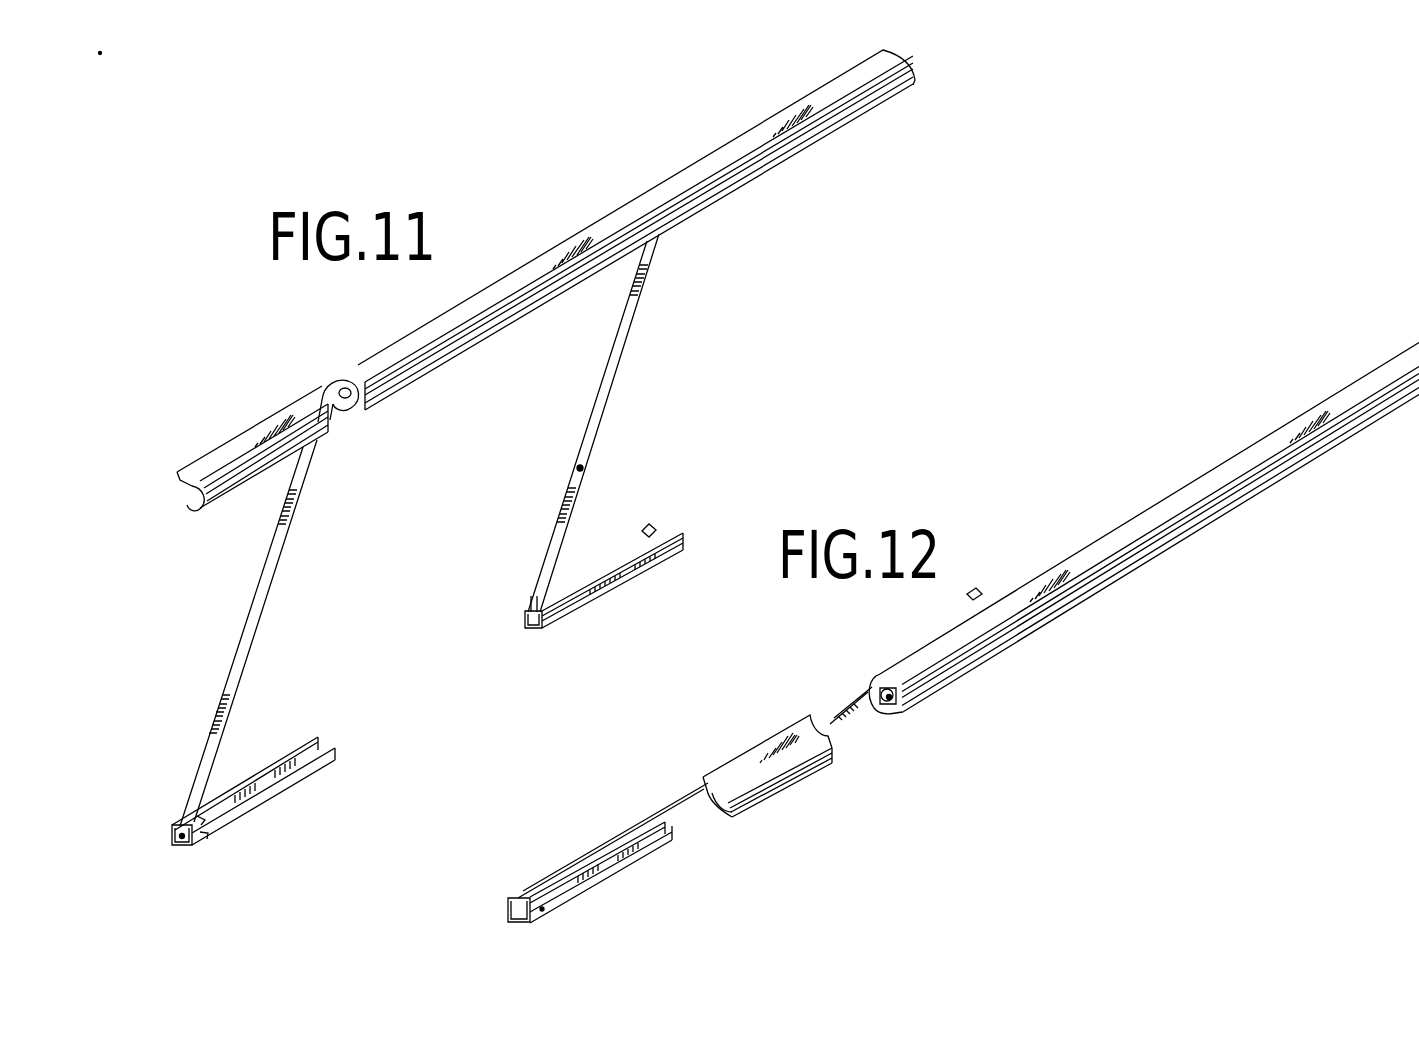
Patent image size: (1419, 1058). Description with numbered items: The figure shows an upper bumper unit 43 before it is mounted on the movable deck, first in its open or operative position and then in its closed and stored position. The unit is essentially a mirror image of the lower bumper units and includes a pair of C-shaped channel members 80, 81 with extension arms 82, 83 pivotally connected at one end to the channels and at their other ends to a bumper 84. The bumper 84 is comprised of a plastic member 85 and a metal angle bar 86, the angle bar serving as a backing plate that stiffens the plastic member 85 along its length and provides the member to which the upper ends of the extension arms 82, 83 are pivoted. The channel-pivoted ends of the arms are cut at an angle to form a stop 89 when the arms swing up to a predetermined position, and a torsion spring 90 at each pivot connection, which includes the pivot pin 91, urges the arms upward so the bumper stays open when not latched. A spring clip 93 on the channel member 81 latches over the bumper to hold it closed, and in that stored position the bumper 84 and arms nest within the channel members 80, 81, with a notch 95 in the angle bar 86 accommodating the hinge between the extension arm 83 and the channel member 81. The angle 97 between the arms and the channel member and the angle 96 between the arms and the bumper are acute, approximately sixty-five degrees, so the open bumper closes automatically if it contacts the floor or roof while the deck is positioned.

In FIG. 11, the upper bumper unit 43 is at (545, 324).
In FIG. 12, the upper bumper unit 43 is at (1061, 580).
In FIG. 11, the C-shaped channel member 80 is at (262, 829).
In FIG. 12, the C-shaped channel member 80 is at (637, 858).
In FIG. 11, the C-shaped channel member 81 is at (605, 566).
In FIG. 11, the extension arm 82 is at (276, 573).
In FIG. 12, the extension arm 82 is at (673, 797).
In FIG. 11, the extension arm 83 is at (620, 381).
In FIG. 11, the bumper 84 is at (468, 358).
In FIG. 11, the plastic member 85 is at (204, 516).
In FIG. 11, the metal angle bar 86 is at (182, 492).
In FIG. 11, the stop 89 is at (178, 846).
In FIG. 11, the torsion spring 90 is at (205, 818).
In FIG. 11, the pivot pin 91 is at (206, 836).
In FIG. 11, the spring clip 93 is at (649, 524).
In FIG. 12, the spring clip 93 is at (972, 594).
In FIG. 11, the notch 95 is at (354, 408).
In FIG. 12, the notch 95 is at (872, 686).
In FIG. 11, the angle between extension arms and bumper 96 is at (238, 492).
In FIG. 11, the angle between extension arms and channel member 97 is at (267, 758).